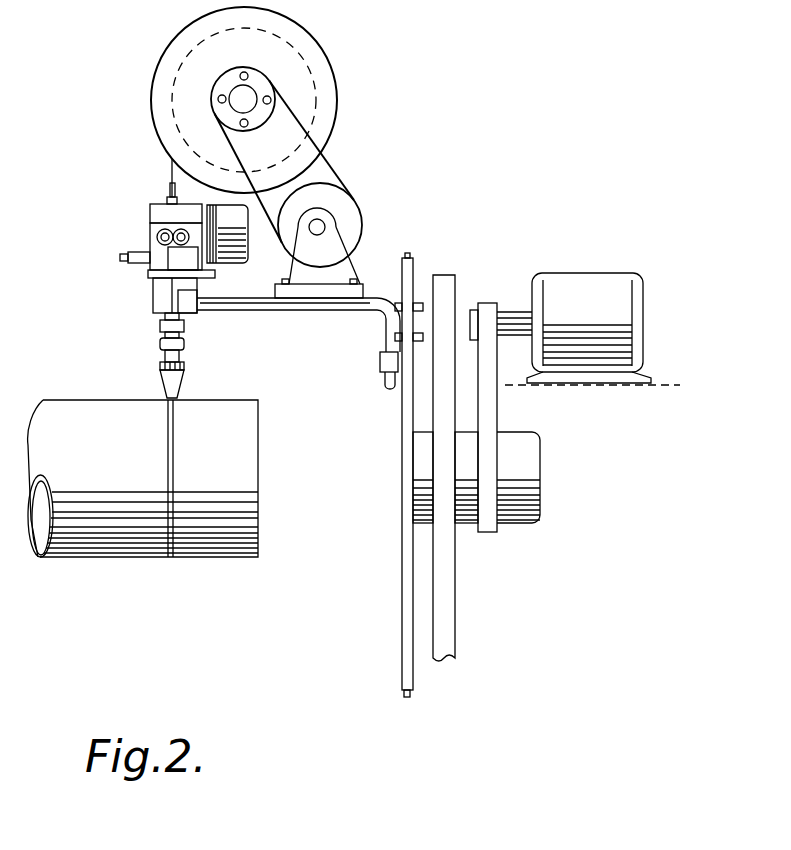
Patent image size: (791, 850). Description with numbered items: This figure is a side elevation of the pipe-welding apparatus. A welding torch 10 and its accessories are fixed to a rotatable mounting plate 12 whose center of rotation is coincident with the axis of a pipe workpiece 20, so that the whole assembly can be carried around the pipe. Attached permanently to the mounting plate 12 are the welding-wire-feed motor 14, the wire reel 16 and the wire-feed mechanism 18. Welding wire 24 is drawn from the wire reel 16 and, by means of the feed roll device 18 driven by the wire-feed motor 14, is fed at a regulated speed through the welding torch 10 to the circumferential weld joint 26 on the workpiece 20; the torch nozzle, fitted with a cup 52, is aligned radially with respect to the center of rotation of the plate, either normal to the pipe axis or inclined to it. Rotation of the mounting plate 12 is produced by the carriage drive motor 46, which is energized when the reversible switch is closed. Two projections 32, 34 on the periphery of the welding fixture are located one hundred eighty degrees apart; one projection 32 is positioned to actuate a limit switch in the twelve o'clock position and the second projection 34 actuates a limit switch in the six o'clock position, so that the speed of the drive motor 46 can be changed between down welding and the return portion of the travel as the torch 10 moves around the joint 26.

The welding torch 10 is at (160, 334).
The rotatable mounting plate 12 is at (401, 619).
The welding-wire-feed motor 14 is at (247, 263).
The wire reel 16 is at (328, 85).
The wire-feed mechanism 18 is at (162, 260).
The pipe workpiece 20 is at (245, 465).
The welding wire 24 is at (170, 160).
The circumferential weld joint 26 is at (170, 558).
The projection 32 is at (408, 253).
The projection 34 is at (409, 698).
The carriage drive motor 46 is at (587, 292).
The cup 52 is at (163, 383).